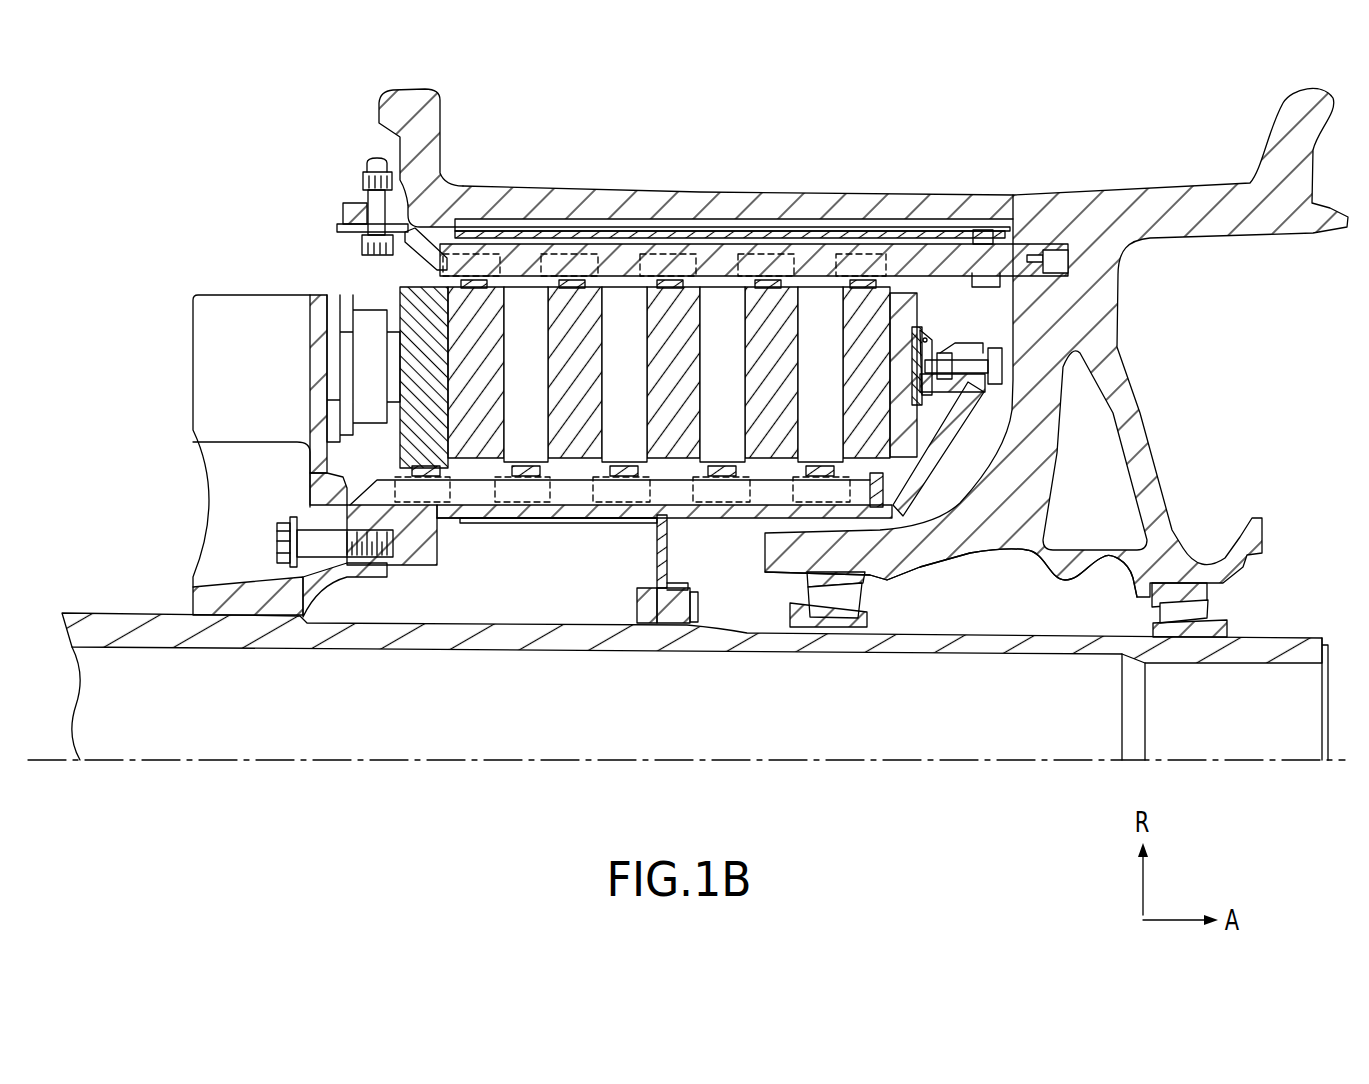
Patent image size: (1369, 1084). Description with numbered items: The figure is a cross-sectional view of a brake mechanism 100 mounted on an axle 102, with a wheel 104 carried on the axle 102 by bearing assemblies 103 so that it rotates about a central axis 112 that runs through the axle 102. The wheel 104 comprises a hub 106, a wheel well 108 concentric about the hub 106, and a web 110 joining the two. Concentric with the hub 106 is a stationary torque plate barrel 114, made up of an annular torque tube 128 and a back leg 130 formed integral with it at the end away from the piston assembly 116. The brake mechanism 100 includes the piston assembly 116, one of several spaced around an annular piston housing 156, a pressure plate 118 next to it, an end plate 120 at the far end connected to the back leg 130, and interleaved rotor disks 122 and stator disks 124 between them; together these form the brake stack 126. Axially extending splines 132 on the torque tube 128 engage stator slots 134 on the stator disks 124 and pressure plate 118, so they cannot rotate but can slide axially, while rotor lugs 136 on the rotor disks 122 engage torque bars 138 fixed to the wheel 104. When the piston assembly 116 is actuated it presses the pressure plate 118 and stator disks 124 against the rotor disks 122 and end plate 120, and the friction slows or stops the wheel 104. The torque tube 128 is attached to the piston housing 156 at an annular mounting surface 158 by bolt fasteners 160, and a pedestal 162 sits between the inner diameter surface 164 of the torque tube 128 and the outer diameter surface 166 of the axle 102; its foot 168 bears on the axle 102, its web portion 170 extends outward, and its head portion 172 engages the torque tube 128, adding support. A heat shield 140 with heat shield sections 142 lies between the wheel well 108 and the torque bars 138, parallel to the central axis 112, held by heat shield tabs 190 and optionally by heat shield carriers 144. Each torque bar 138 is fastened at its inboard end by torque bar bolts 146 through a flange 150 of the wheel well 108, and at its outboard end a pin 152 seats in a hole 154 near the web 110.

The brake mechanism 100 is at (190, 162).
The axle 102 is at (987, 650).
The bearing assemblies 103 is at (1195, 600).
The wheel 104 is at (1150, 352).
The hub 106 is at (960, 557).
The wheel well 108 is at (1010, 198).
The web 110 is at (1148, 430).
The central axis 112 is at (943, 762).
The torque plate barrel 114 is at (500, 530).
The piston assembly 116 is at (285, 272).
The pressure plate 118 is at (400, 297).
The end plate 120 is at (913, 307).
The rotor disks 122 is at (872, 302).
The stator disks 124 is at (724, 296).
The brake stack 126 is at (862, 303).
The torque tube 128 is at (457, 520).
The back leg 130 is at (940, 437).
The splines 132 is at (378, 495).
The stator slots 134 is at (792, 490).
The rotor lugs 136 is at (500, 262).
The torque bars 138 is at (928, 268).
The heat shield 140 is at (666, 228).
The heat shield sections 142 is at (780, 300).
The heat shield carriers 144 is at (421, 192).
The torque bar bolts 146 is at (374, 158).
The flange 150 is at (348, 207).
The pin 152 is at (1022, 250).
The hole 154 is at (1050, 252).
The annular piston housing 156 is at (190, 296).
The annular mounting surface 158 is at (390, 572).
The bolt fasteners 160 is at (285, 540).
The pedestal 162 is at (648, 550).
The inner diameter surface 164 is at (546, 520).
The outer diameter surface 166 is at (695, 625).
The foot 168 is at (694, 592).
The web portion 170 is at (652, 575).
The head portion 172 is at (656, 522).
The heat shield tabs 190 is at (961, 354).